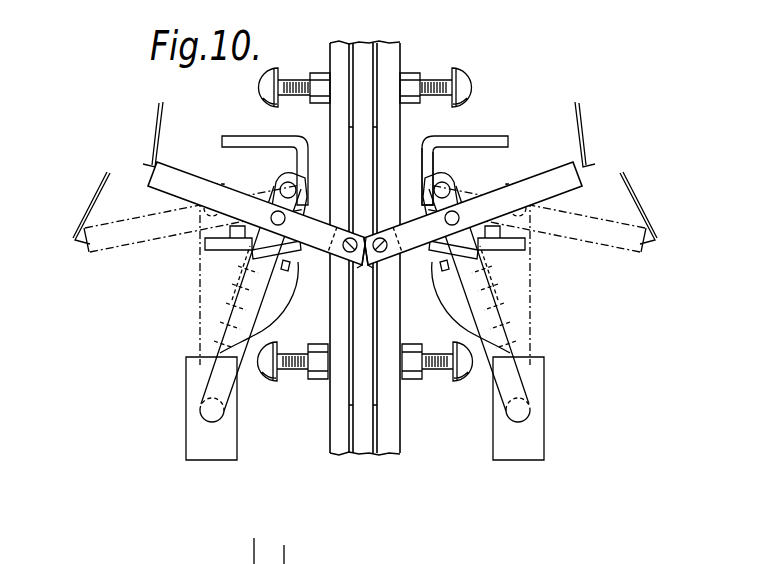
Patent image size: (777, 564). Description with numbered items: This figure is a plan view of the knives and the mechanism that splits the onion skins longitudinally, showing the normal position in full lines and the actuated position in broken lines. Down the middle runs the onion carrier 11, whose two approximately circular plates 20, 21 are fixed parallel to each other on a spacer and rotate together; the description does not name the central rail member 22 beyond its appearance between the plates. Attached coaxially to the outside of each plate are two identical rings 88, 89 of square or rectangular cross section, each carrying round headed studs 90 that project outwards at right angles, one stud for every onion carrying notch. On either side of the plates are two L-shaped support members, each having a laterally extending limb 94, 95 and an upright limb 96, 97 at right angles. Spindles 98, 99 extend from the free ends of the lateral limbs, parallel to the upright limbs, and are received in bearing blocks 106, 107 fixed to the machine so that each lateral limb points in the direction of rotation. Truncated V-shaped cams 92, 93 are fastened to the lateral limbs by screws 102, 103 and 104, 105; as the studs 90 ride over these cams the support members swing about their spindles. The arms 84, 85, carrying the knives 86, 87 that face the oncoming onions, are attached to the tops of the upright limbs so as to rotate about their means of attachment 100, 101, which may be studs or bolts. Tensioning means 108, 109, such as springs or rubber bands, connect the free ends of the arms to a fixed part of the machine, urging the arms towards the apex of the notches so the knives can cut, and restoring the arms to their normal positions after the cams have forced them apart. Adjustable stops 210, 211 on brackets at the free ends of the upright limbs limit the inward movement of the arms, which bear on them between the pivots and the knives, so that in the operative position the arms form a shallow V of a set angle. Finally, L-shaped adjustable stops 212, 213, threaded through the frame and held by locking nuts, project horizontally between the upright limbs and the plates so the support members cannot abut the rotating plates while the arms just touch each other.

The onion carrier 11 is at (136, 287).
The circular plate 20 is at (378, 455).
The circular plate 21 is at (350, 455).
The track rail 22 is at (366, 255).
The arm 84 is at (562, 178).
The arm 85 is at (178, 178).
The knife 86 is at (374, 268).
The knife 87 is at (356, 268).
The ring 88 is at (383, 425).
The ring 89 is at (332, 425).
The round headed stud 90 is at (273, 73).
The cam 92 is at (444, 307).
The cam 93 is at (280, 302).
The laterally extending limb 94 is at (500, 357).
The laterally extending limb 95 is at (227, 355).
The upright limb 96 is at (440, 196).
The upright limb 97 is at (276, 183).
The spindle 98 is at (527, 408).
The spindle 99 is at (208, 406).
The means of attachment 100 is at (432, 212).
The means of attachment 101 is at (272, 222).
The screw 102 is at (497, 300).
The screw 103 is at (490, 275).
The screw 104 is at (240, 298).
The screw 105 is at (247, 272).
The bearing block 106 is at (528, 450).
The bearing block 107 is at (200, 443).
The tensioning means 108 is at (599, 118).
The tensioning means 109 is at (160, 124).
The adjustable stop 210 is at (478, 249).
The adjustable stop 211 is at (351, 236).
The L-shaped adjustable stop 212 is at (504, 136).
The L-shaped adjustable stop 213 is at (246, 137).